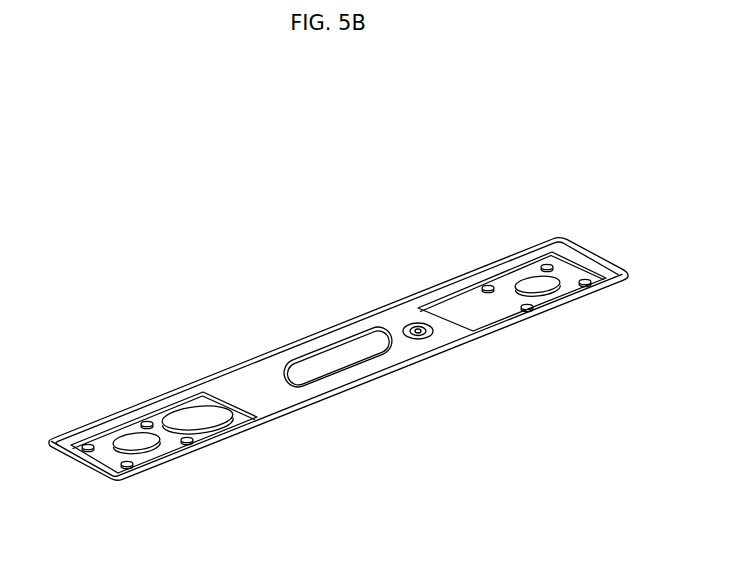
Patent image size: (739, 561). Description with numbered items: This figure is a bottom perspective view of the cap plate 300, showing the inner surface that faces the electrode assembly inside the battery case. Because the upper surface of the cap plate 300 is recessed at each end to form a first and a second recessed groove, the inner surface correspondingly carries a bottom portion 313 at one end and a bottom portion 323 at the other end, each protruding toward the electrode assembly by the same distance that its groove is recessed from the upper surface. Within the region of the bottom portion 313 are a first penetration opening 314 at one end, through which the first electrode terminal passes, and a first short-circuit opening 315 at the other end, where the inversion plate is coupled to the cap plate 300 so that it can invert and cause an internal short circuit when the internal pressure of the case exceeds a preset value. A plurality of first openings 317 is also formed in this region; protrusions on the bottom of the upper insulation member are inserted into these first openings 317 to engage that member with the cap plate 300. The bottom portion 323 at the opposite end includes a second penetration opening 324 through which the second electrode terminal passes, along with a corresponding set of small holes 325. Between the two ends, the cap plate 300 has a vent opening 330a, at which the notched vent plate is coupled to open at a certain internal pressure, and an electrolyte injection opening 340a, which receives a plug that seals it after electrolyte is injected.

The cap plate 300 is at (333, 327).
The bottom portion 313 is at (200, 396).
The first openings 317 is at (144, 419).
The first penetration opening 314 is at (137, 437).
The first short-circuit opening 315 is at (194, 417).
The vent opening 330a is at (338, 354).
The electrolyte injection opening 340a is at (423, 338).
The bottom portion 323 is at (452, 305).
The coupling holes 325 is at (545, 264).
The second penetration opening 324 is at (537, 284).